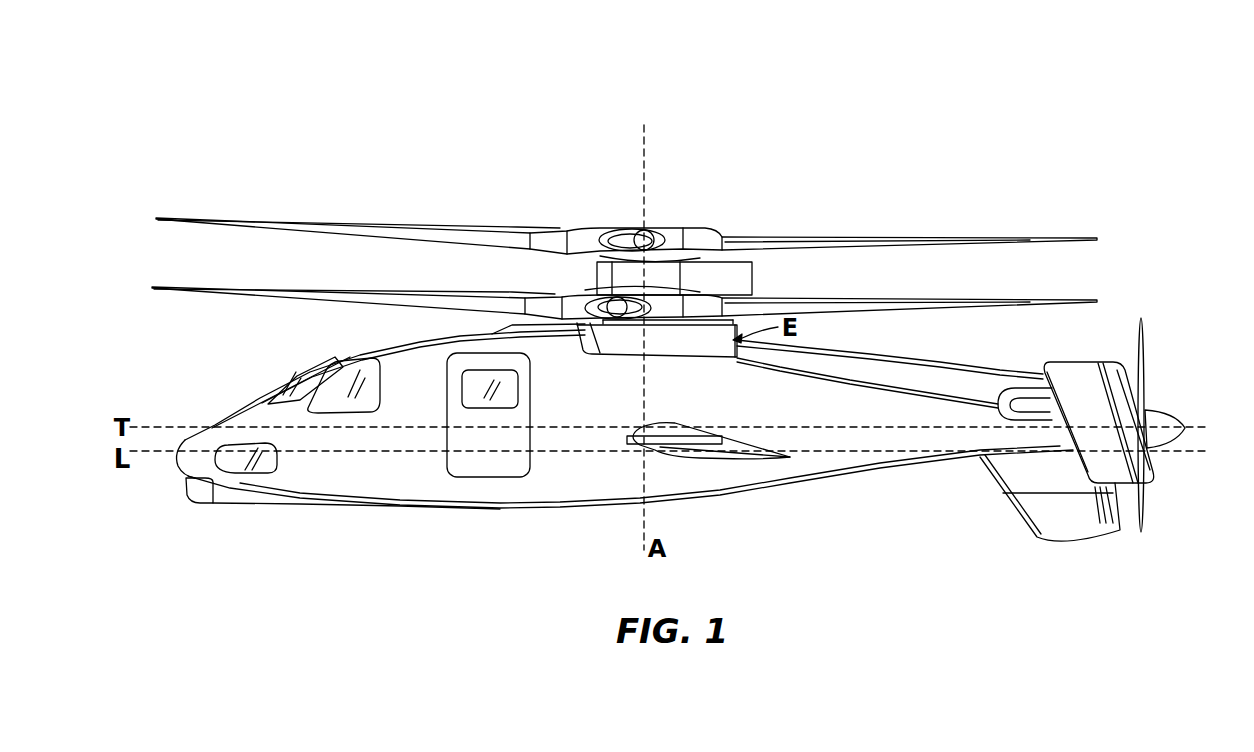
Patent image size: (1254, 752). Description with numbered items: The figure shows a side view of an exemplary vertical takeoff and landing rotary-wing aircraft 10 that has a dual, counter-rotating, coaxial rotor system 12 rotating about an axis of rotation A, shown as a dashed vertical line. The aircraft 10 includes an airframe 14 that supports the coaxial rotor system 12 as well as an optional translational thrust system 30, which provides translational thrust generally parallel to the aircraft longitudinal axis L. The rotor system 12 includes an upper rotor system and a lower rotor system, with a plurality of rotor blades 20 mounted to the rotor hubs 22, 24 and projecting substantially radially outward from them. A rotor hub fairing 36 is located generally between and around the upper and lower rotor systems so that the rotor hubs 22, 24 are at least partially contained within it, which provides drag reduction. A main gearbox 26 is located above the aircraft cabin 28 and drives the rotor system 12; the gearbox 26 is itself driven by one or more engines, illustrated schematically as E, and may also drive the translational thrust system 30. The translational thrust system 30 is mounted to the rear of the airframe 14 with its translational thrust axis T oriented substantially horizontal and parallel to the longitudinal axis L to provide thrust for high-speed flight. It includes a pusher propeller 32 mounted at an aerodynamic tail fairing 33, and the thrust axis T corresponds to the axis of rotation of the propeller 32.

The rotary-wing aircraft 10 is at (352, 152).
The coaxial rotor system 12 is at (614, 186).
The airframe 14 is at (347, 352).
The rotor blades 20 is at (988, 298).
The rotor hub 22 is at (583, 224).
The rotor hub 24 is at (593, 297).
The main gearbox 26 is at (620, 350).
The aircraft cabin 28 is at (399, 487).
The translational thrust system 30 is at (1141, 323).
The pusher propeller 32 is at (1142, 507).
The aerodynamic tail fairing 33 is at (1045, 517).
The rotor hub fairing 36 is at (646, 225).